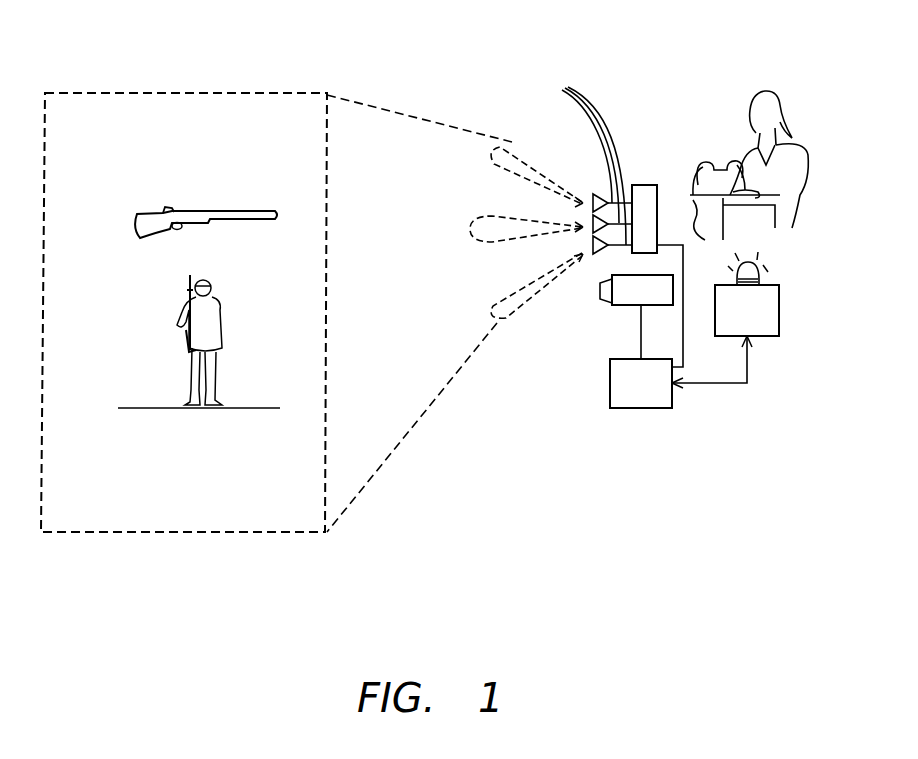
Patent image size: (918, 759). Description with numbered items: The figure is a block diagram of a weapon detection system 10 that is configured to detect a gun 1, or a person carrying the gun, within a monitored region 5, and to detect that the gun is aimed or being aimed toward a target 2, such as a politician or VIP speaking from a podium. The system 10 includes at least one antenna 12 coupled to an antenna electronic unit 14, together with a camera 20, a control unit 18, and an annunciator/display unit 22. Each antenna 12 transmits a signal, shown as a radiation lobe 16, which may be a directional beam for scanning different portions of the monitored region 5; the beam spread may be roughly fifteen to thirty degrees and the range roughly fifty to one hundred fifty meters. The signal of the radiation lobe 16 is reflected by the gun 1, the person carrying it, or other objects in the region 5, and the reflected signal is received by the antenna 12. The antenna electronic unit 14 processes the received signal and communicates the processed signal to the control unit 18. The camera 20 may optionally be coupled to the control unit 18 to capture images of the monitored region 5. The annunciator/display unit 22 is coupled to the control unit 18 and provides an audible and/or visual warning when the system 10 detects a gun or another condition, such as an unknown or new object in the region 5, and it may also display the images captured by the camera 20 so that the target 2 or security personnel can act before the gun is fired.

The gun 1 is at (207, 185).
The target 2 is at (752, 110).
The monitored region 5 is at (236, 93).
The weapon detection system 10 is at (574, 372).
The antenna 12 is at (581, 162).
The antenna electronic unit 14 is at (645, 185).
The radiation lobe 16 is at (500, 168).
The control unit 18 is at (645, 408).
The camera 20 is at (613, 305).
The annunciator/display unit 22 is at (757, 336).